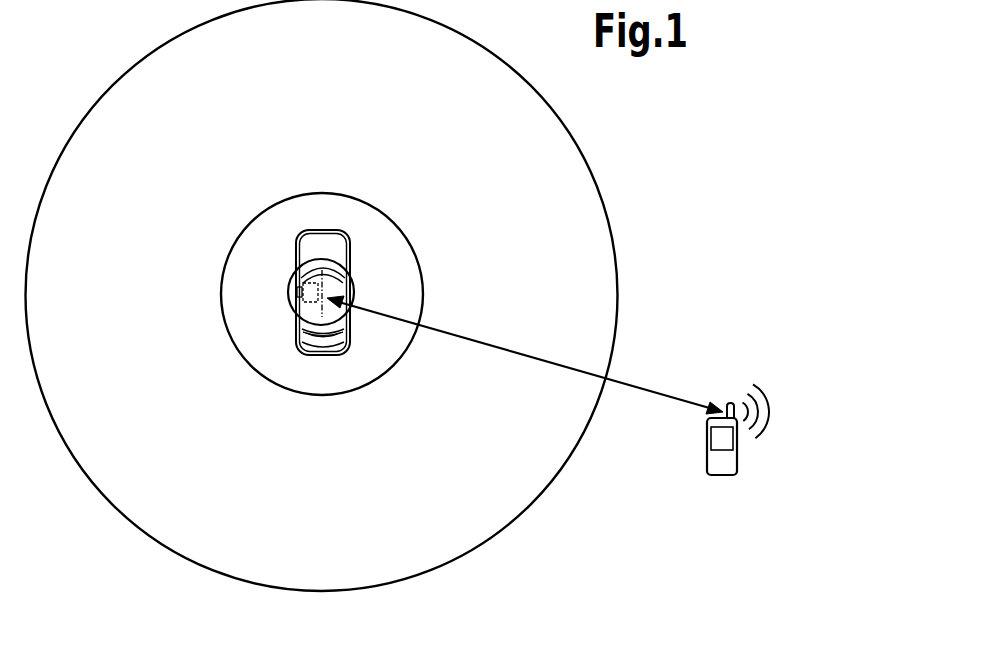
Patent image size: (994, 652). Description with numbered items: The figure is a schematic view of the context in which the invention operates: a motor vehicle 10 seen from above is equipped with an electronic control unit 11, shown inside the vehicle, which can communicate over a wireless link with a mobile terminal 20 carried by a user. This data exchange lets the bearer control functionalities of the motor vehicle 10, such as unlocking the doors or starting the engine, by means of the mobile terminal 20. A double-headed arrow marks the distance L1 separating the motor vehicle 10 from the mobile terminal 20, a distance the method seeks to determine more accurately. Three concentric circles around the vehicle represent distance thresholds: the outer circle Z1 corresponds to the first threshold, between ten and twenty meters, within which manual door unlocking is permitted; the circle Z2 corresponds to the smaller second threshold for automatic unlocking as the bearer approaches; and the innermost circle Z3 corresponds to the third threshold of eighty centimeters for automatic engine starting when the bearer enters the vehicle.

The circle Z1 is at (608, 207).
The circle Z2 is at (283, 198).
The circle Z3 is at (363, 287).
The motor vehicle 10 is at (350, 347).
The electronic control unit 11 is at (310, 303).
The mobile terminal 20 is at (764, 455).
The distance L1 is at (525, 355).